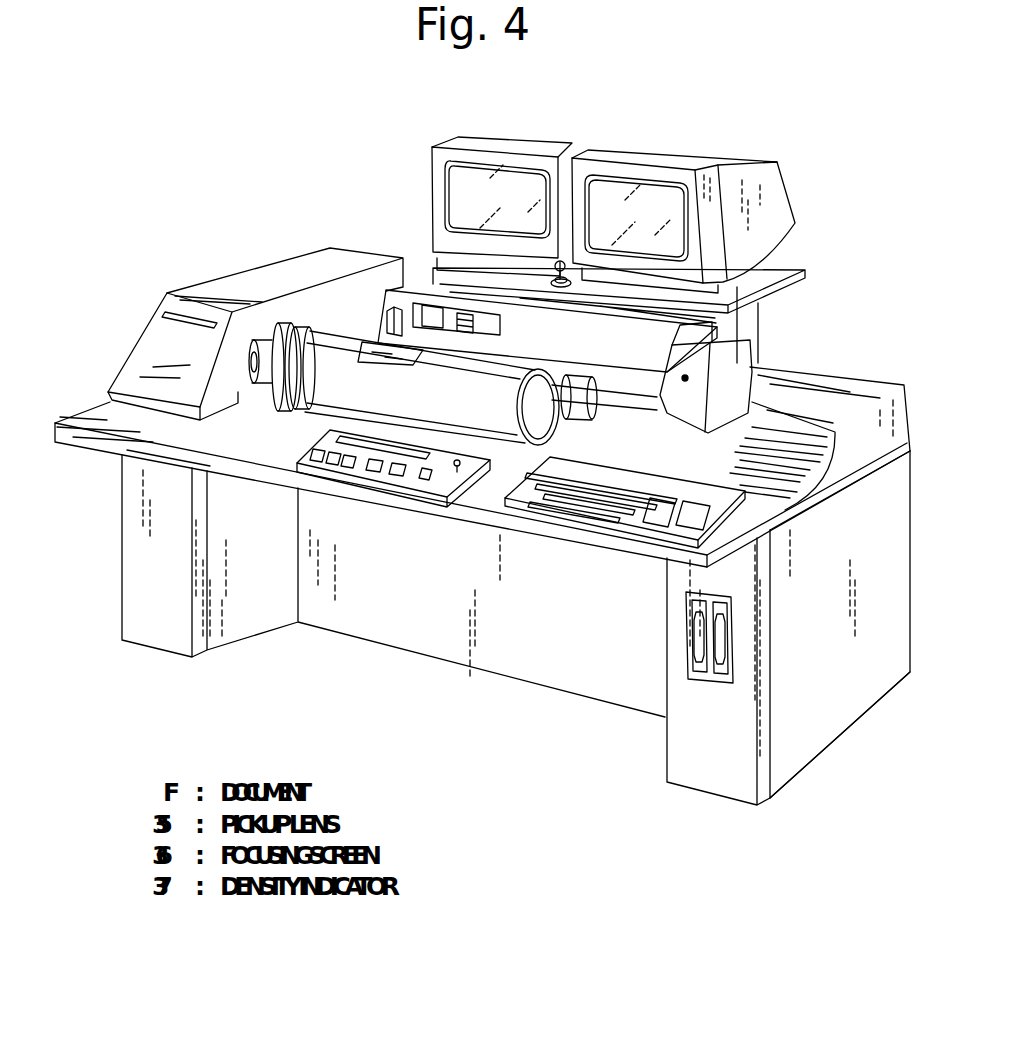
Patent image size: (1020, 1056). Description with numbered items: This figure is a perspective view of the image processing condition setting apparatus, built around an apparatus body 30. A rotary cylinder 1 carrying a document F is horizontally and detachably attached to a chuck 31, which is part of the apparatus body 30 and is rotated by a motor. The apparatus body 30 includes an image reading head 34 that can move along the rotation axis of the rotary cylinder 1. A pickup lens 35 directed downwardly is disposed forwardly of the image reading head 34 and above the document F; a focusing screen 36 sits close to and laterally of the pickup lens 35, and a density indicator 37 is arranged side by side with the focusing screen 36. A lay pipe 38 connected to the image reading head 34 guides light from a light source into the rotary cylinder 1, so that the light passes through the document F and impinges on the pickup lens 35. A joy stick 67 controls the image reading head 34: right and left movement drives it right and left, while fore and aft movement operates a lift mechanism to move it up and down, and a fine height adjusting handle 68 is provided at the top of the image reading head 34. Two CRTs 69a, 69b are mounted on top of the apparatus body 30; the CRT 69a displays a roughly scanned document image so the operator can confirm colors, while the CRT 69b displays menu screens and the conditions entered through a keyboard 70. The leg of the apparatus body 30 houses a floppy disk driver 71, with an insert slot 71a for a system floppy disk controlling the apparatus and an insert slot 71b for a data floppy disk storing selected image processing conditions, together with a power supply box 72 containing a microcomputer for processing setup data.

The apparatus body 30 is at (233, 238).
The chuck 31 is at (295, 326).
The image reading head 34 is at (411, 259).
The pickup lens 35 is at (389, 323).
The focusing screen 36 is at (431, 308).
The density indicator 37 is at (500, 330).
The lay pipe 38 is at (630, 413).
The rotary cylinder 1 is at (317, 413).
The document F is at (407, 360).
The joy stick 67 is at (452, 478).
The fine height adjusting handle 68 is at (566, 288).
The CRT 69a is at (470, 147).
The CRT 69b is at (680, 158).
The keyboard 70 is at (593, 515).
The floppy disk driver 71 is at (724, 674).
The insert slot 71a is at (697, 683).
The insert slot 71b is at (727, 683).
The power supply box 72 is at (833, 712).